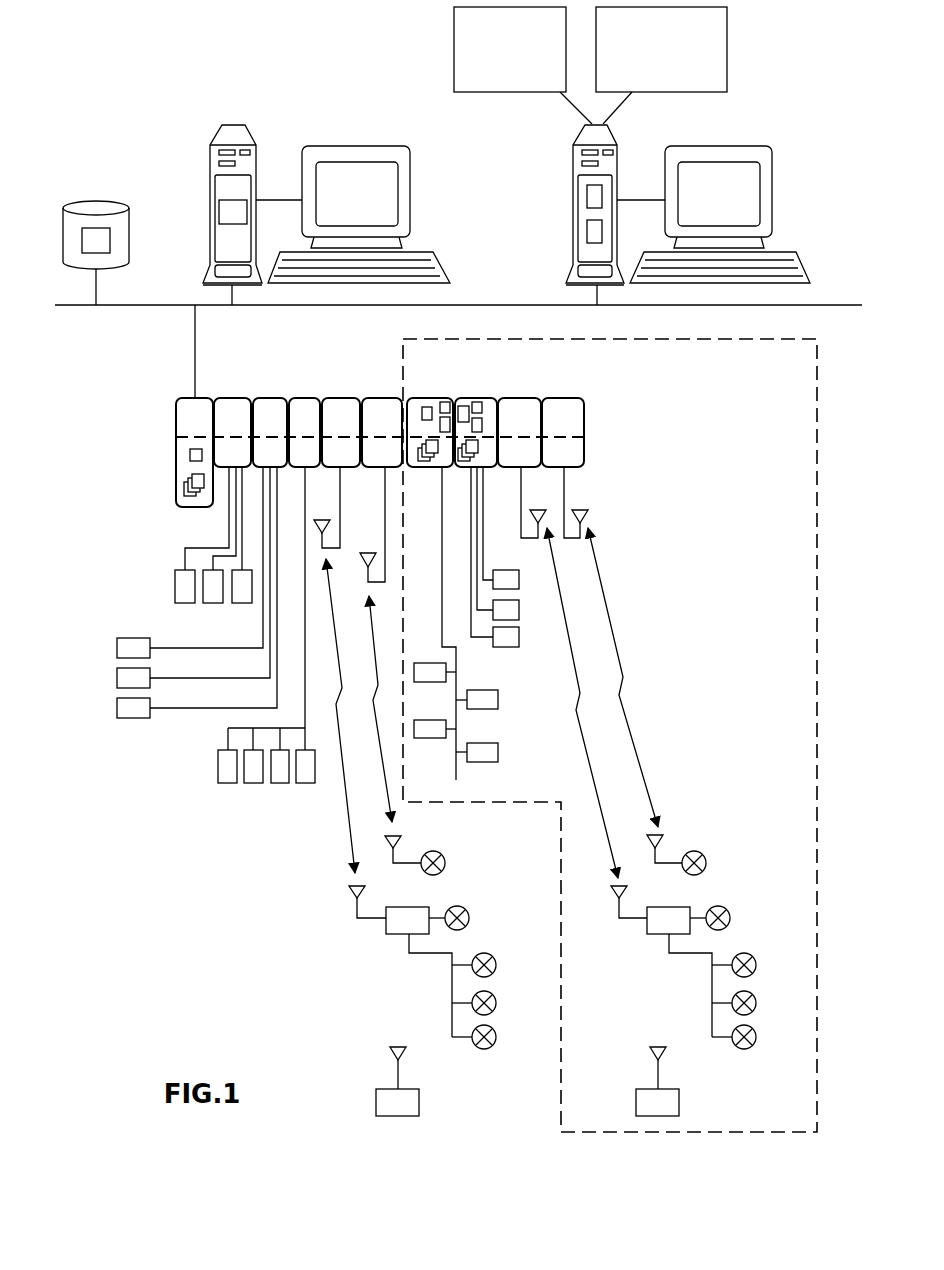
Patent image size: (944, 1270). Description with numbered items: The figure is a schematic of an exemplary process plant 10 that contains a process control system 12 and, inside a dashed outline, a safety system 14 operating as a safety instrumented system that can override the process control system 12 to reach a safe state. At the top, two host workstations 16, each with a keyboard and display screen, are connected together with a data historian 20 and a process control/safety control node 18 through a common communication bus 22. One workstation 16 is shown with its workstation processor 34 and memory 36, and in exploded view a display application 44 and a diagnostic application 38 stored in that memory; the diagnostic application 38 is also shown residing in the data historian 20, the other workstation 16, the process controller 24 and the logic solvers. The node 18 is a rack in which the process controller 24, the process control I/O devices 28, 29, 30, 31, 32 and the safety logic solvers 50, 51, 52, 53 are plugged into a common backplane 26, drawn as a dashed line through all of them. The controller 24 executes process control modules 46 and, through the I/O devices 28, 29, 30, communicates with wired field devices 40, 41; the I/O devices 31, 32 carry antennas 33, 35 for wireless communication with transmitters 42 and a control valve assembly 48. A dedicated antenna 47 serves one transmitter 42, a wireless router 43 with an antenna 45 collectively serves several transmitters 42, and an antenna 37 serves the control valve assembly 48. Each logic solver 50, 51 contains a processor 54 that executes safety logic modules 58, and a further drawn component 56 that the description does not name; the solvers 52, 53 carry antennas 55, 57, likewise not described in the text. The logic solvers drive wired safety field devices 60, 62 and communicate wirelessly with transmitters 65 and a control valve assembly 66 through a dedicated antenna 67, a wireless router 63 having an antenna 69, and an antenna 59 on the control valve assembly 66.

The process plant 10 is at (114, 96).
The process control system 12 is at (78, 590).
The safety system 14 is at (819, 660).
The host workstation 16 is at (217, 133).
The process control/safety control node 18 is at (108, 402).
The data historian 20 is at (117, 201).
The communication bus 22 is at (837, 304).
The process controller 24 is at (180, 508).
The backplane 26 is at (186, 437).
The process control system I/O device 28 is at (233, 398).
The process control system I/O device 29 is at (276, 398).
The process control system I/O device 30 is at (301, 398).
The I/O device 31 is at (341, 398).
The I/O device 32 is at (378, 398).
The antenna 33 is at (322, 520).
The workstation processor 34 is at (586, 190).
The antenna 35 is at (368, 553).
The memory 36 is at (586, 230).
The antenna 37 is at (408, 1054).
The diagnostic application 38 is at (727, 28).
The field device 40 is at (186, 604).
The field device 41 is at (226, 785).
The transmitter 42 is at (446, 862).
The wireless router 43 is at (396, 936).
The display application 44 is at (453, 28).
The antenna 45 is at (368, 901).
The process control module 46 is at (203, 491).
The antenna 47 is at (405, 841).
The control valve assembly 48 is at (419, 1101).
The safety system logic solver 50 is at (443, 398).
The safety system logic solver 51 is at (474, 398).
The safety system logic solver 52 is at (522, 398).
The safety system logic solver 53 is at (563, 398).
The processor 54 is at (448, 402).
The antenna 55 is at (538, 510).
The memory 56 is at (440, 426).
The antenna 57 is at (580, 510).
The safety logic module 58 is at (428, 462).
The antenna 59 is at (668, 1054).
The safety system field device 60 is at (520, 580).
The safety system field device 62 is at (423, 683).
The wireless router 63 is at (657, 936).
The transmitter 65 is at (706, 862).
The control valve assembly 66 is at (679, 1101).
The antenna 67 is at (664, 841).
The antenna 69 is at (630, 901).